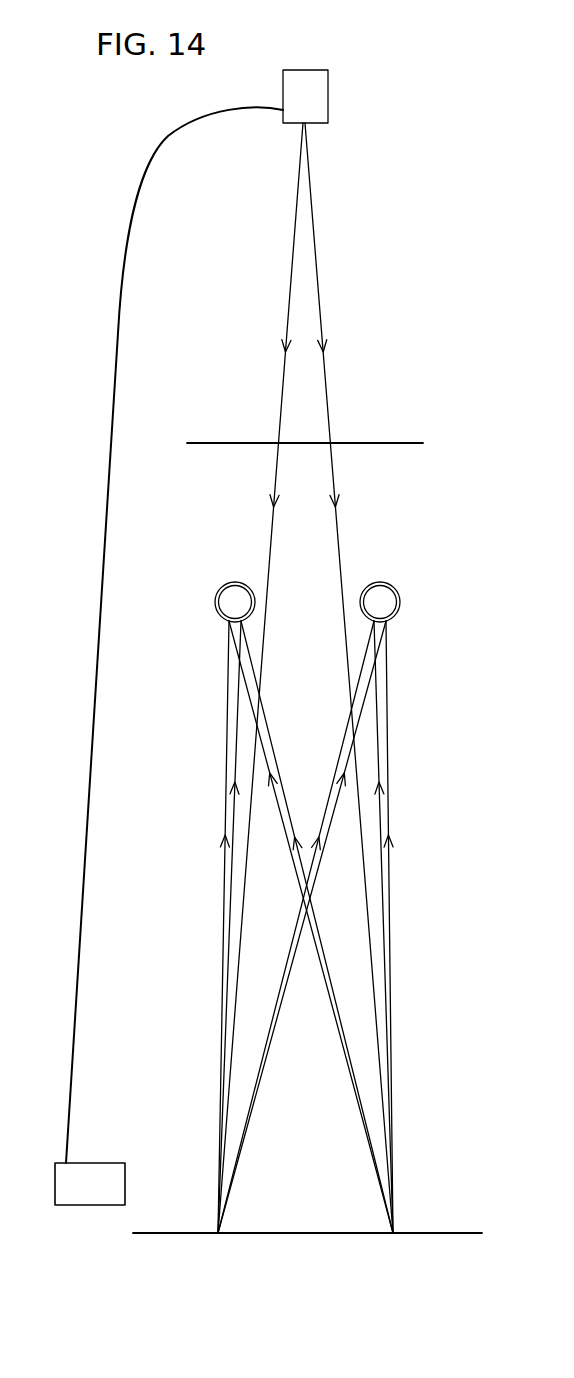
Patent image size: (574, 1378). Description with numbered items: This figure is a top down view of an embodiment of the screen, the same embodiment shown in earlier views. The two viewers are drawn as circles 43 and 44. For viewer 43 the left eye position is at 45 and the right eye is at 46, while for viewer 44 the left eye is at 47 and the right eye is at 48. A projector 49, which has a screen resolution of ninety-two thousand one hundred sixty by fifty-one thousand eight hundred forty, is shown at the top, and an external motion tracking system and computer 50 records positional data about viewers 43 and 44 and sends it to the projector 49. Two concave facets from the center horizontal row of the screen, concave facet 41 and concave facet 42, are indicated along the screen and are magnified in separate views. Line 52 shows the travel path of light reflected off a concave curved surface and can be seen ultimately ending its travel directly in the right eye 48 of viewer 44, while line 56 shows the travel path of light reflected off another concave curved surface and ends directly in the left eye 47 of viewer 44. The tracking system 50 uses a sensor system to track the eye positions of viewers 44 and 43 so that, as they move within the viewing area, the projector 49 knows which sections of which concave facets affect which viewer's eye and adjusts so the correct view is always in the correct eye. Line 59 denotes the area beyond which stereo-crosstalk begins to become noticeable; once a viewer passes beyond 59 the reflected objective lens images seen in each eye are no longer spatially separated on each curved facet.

The concave facet 41 is at (393, 1238).
The concave facet 42 is at (215, 1240).
The viewer 43 is at (403, 591).
The viewer 44 is at (212, 594).
The left eye position 45 is at (388, 627).
The right eye position 46 is at (367, 625).
The left eye position 47 is at (245, 625).
The right eye position 48 is at (228, 625).
The projector 49 is at (333, 105).
The external motion tracking system and computer 50 is at (112, 1162).
The line 52 is at (293, 863).
The line 56 is at (280, 753).
The line 59 is at (423, 442).